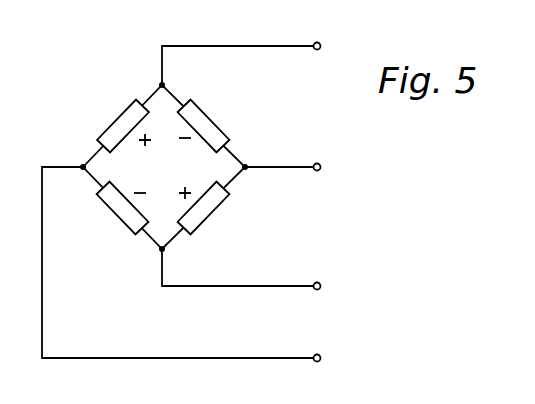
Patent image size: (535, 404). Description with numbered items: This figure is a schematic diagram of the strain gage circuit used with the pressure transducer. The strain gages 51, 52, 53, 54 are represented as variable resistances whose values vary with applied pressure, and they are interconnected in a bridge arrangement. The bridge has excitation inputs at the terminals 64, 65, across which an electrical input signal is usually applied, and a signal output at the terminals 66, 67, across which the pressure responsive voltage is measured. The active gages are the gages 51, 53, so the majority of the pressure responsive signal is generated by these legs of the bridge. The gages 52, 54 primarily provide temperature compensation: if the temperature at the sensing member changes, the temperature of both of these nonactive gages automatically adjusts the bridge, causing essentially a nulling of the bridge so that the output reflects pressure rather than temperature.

The strain gage 51 is at (108, 126).
The strain gage 52 is at (113, 218).
The strain gage 53 is at (220, 210).
The strain gage 54 is at (213, 116).
The excitation input terminal 64 is at (317, 42).
The excitation input terminal 65 is at (314, 283).
The signal output terminal 66 is at (315, 163).
The signal output terminal 67 is at (316, 354).